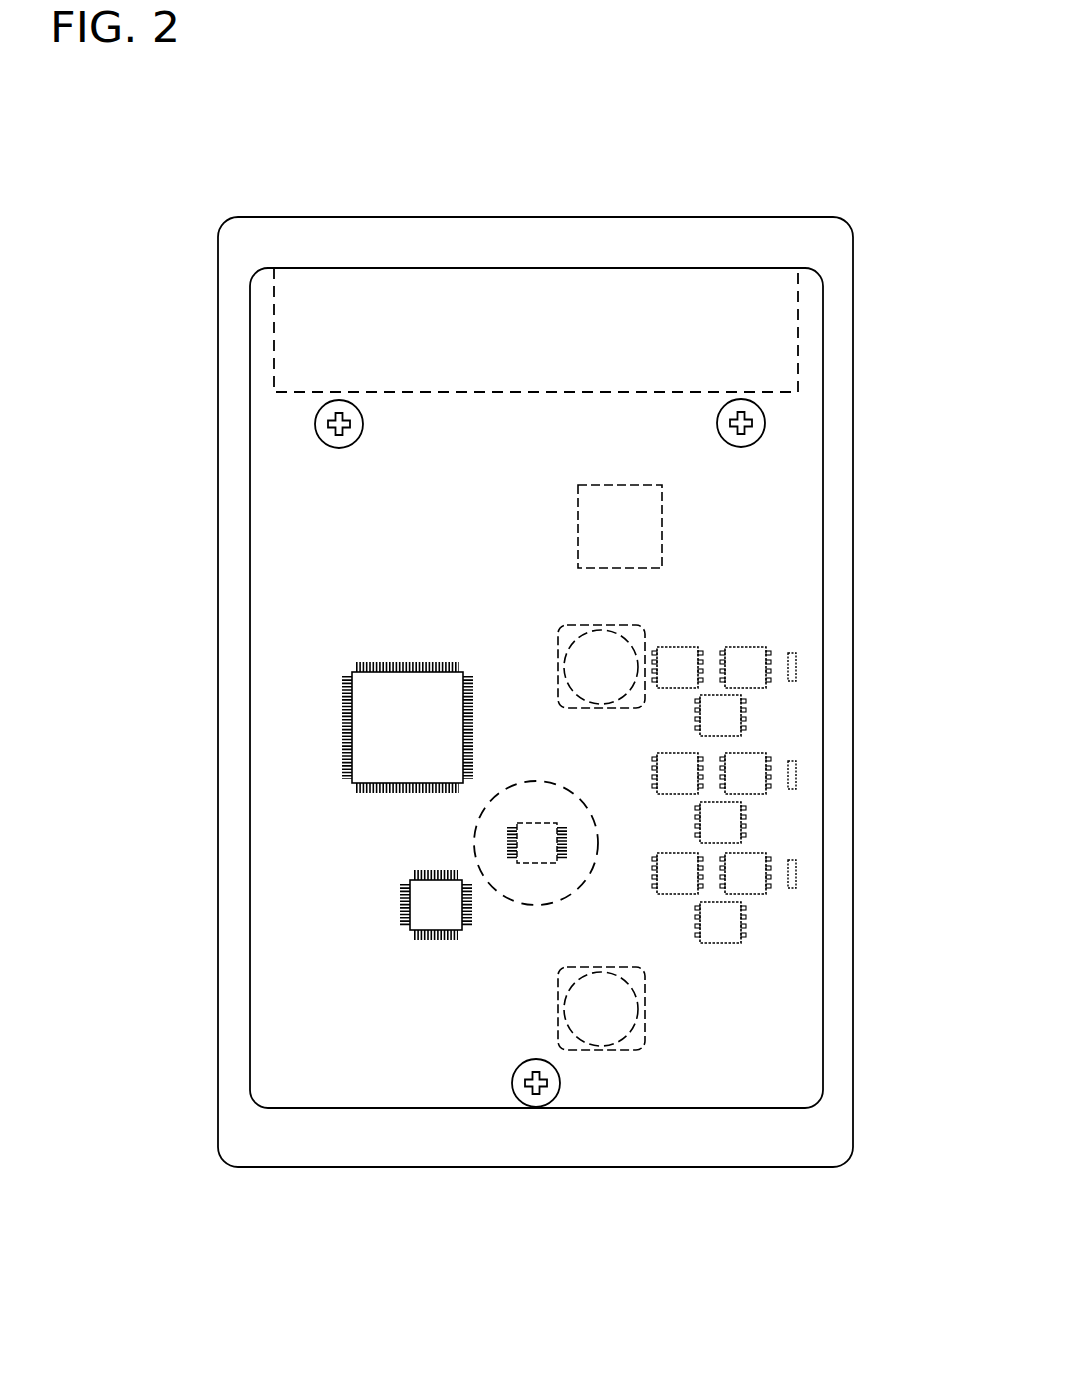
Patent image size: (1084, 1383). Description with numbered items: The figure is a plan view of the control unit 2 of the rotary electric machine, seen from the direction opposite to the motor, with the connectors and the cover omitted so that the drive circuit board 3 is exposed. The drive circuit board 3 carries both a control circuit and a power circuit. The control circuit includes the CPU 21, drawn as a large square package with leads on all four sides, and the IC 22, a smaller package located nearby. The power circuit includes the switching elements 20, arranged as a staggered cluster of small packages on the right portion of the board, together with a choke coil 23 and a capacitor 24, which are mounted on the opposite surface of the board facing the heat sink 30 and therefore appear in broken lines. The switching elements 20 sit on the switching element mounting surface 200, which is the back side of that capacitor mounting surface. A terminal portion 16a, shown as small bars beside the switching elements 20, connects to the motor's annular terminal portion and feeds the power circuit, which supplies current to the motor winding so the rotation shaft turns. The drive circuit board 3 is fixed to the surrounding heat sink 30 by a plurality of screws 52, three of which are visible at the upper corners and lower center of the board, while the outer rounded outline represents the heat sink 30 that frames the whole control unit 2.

The control unit 2 is at (652, 200).
The drive circuit board 3 is at (798, 573).
The terminal portion 16a is at (795, 870).
The switching elements 20 is at (747, 778).
The CPU 21 is at (383, 713).
The IC 22 is at (436, 906).
The choke coil 23 is at (632, 521).
The capacitor 24 is at (620, 652).
The heat sink 30 is at (840, 1097).
The screws 52 is at (317, 423).
The switching element mounting surface 200 is at (322, 1067).